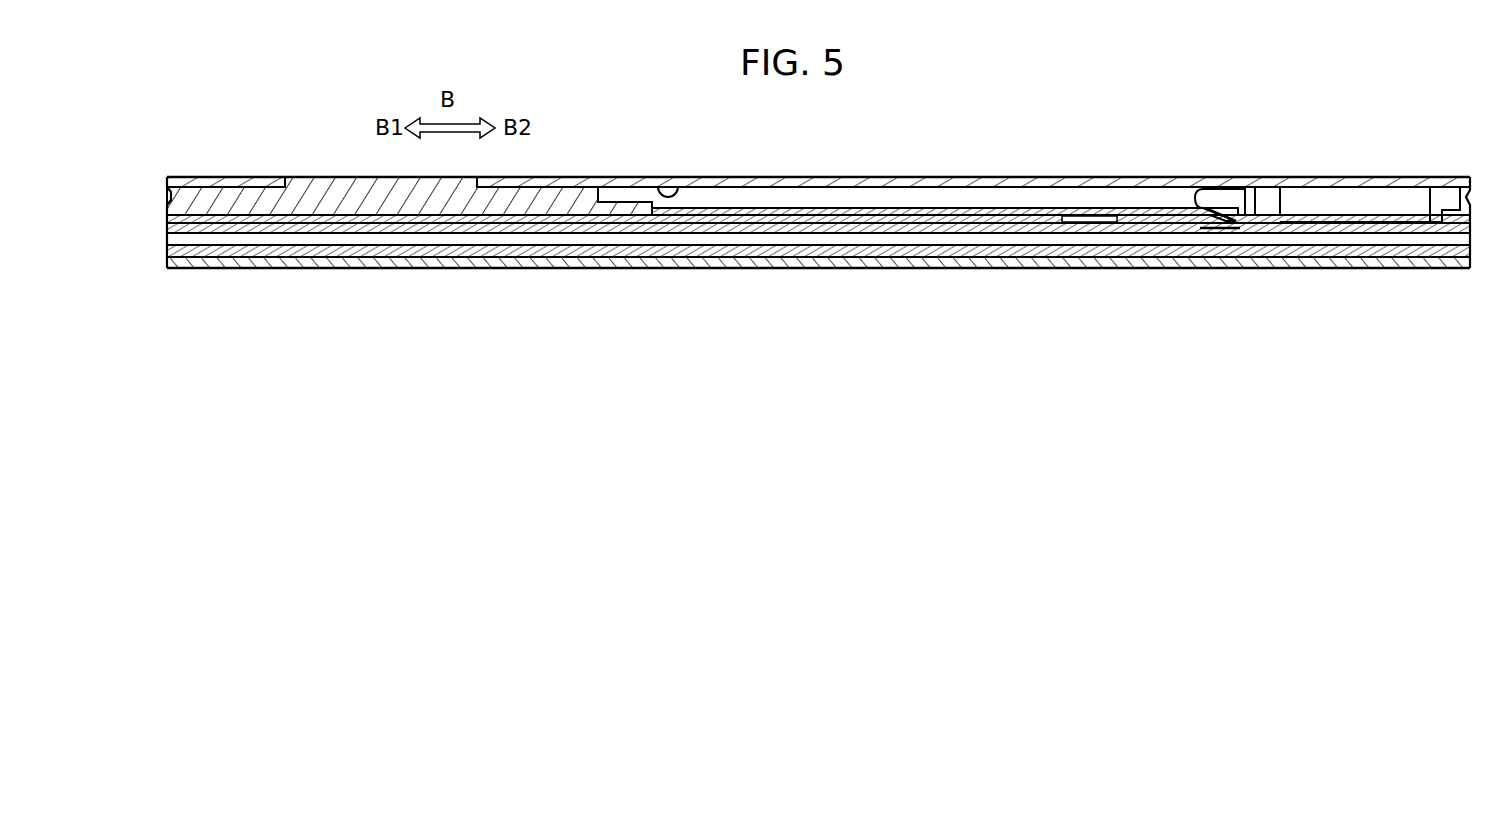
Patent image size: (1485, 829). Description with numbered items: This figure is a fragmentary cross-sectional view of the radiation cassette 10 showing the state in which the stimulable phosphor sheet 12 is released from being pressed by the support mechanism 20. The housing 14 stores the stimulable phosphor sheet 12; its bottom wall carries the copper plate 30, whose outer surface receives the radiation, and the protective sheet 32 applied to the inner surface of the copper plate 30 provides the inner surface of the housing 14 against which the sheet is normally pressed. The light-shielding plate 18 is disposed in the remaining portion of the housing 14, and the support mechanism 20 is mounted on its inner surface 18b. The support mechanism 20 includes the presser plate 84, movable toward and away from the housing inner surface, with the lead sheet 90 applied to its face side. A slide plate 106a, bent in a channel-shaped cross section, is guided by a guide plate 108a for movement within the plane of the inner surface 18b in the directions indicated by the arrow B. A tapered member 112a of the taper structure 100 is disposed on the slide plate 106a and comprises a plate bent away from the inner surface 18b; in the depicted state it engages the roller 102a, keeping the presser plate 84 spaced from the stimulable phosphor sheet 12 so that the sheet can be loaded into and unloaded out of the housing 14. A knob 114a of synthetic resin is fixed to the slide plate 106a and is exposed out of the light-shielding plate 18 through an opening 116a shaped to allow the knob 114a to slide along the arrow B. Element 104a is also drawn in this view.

The radiation cassette 10 is at (932, 82).
The stimulable phosphor sheet 12 is at (566, 268).
The housing 14 is at (818, 281).
The light-shielding plate 18 is at (1336, 172).
The inner surface of the light-shielding plate 18b is at (674, 186).
The support mechanism 20 is at (818, 202).
The copper plate 30 is at (695, 251).
The protective sheet 32 is at (630, 258).
The presser plate 84 is at (908, 222).
The lead sheet 90 is at (742, 240).
The taper structure 100 is at (1250, 177).
The roller 102a is at (1210, 200).
The stopper block 104a is at (1261, 206).
The slide plate 106a is at (840, 209).
The guide plate 108a is at (1105, 218).
The tapered member 112a is at (1228, 213).
The knob 114a is at (330, 200).
The opening 116a is at (248, 177).